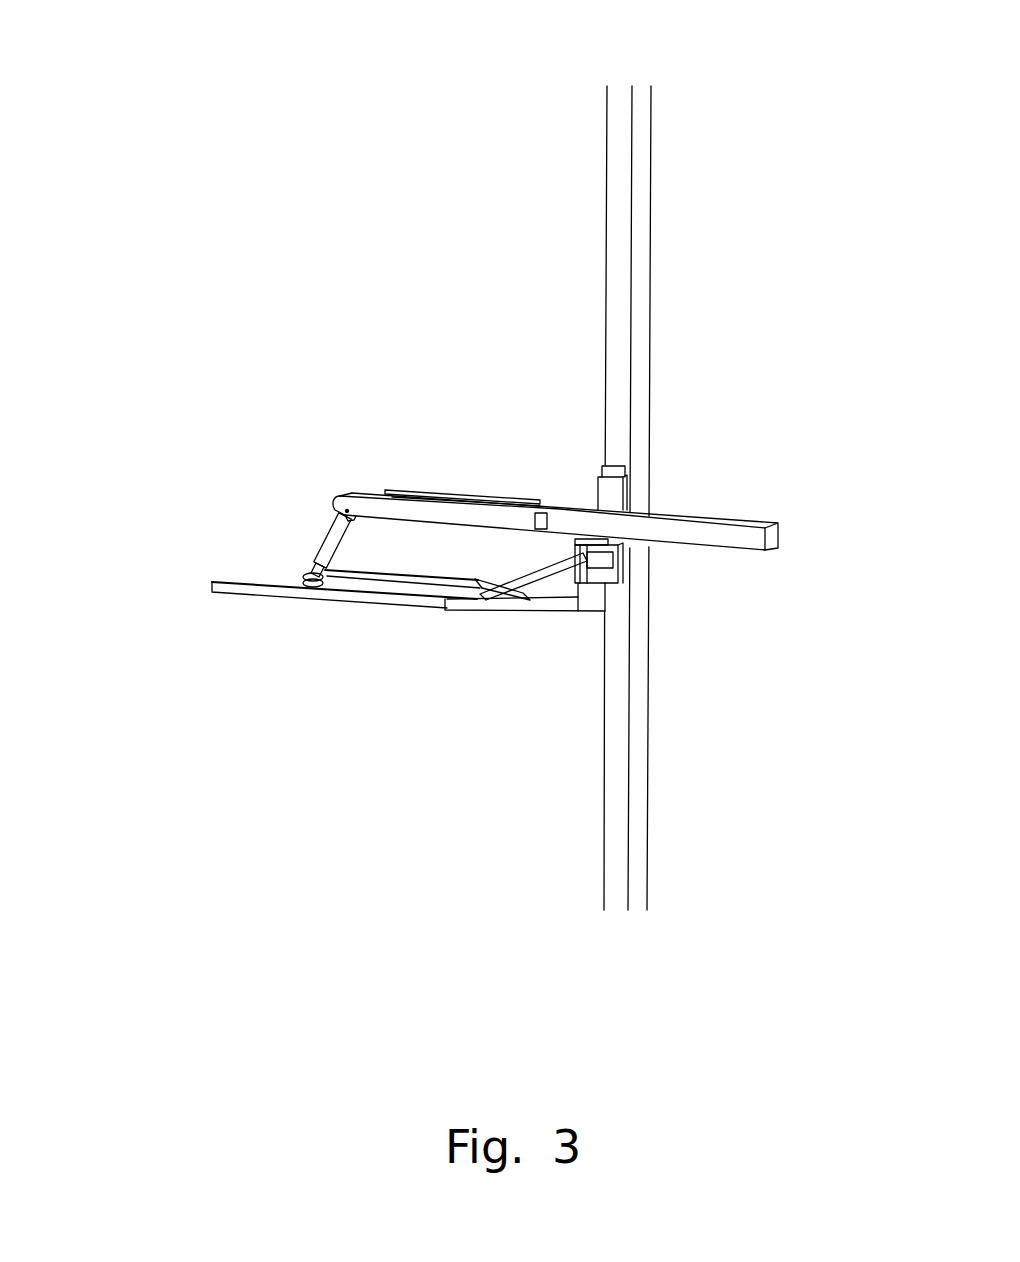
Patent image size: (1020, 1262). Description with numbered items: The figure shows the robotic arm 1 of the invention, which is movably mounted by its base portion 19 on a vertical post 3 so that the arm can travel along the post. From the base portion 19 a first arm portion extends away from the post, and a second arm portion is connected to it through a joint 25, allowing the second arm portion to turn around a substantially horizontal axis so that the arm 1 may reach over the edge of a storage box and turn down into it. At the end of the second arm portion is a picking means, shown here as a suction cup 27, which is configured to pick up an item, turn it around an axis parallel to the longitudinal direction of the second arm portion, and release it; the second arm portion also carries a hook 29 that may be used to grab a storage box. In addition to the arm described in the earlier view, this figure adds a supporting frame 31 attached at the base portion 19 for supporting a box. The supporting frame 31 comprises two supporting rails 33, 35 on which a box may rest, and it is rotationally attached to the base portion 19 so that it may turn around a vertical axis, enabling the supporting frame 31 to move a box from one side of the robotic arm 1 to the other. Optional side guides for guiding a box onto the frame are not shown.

The robotic arm 1 is at (422, 210).
The vertical post 3 is at (643, 400).
The base portion 19 is at (600, 488).
The joint 25 is at (325, 448).
The suction cup 27 is at (300, 582).
The hook 29 is at (325, 507).
The supporting frame 31 is at (487, 680).
The supporting rail 33 is at (382, 600).
The supporting rail 35 is at (363, 569).